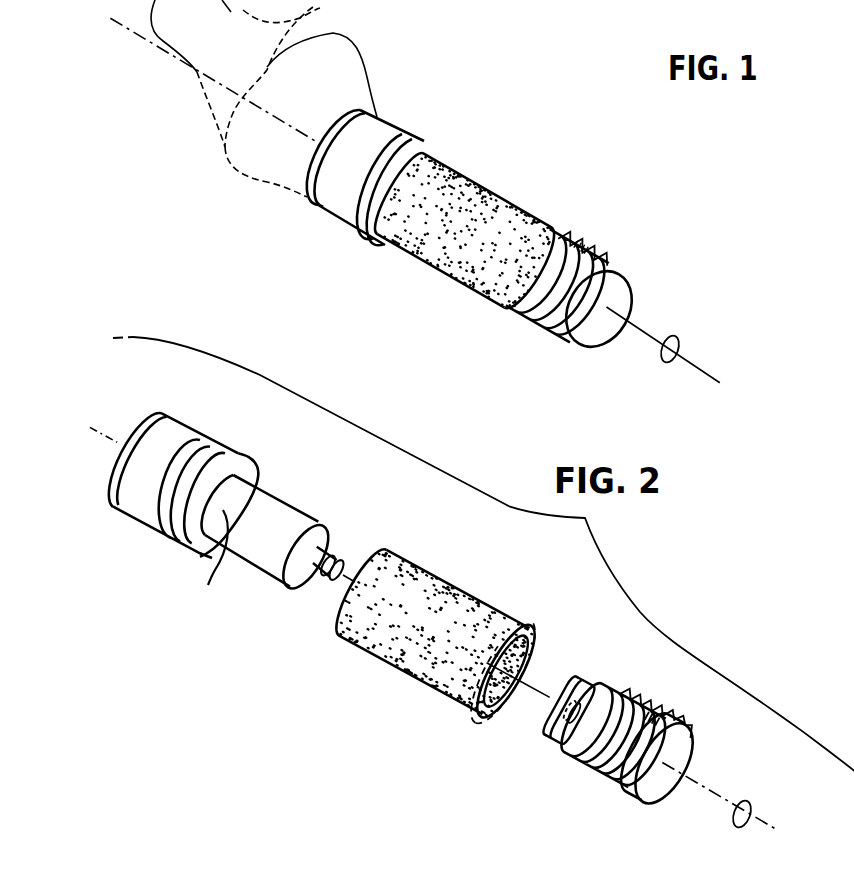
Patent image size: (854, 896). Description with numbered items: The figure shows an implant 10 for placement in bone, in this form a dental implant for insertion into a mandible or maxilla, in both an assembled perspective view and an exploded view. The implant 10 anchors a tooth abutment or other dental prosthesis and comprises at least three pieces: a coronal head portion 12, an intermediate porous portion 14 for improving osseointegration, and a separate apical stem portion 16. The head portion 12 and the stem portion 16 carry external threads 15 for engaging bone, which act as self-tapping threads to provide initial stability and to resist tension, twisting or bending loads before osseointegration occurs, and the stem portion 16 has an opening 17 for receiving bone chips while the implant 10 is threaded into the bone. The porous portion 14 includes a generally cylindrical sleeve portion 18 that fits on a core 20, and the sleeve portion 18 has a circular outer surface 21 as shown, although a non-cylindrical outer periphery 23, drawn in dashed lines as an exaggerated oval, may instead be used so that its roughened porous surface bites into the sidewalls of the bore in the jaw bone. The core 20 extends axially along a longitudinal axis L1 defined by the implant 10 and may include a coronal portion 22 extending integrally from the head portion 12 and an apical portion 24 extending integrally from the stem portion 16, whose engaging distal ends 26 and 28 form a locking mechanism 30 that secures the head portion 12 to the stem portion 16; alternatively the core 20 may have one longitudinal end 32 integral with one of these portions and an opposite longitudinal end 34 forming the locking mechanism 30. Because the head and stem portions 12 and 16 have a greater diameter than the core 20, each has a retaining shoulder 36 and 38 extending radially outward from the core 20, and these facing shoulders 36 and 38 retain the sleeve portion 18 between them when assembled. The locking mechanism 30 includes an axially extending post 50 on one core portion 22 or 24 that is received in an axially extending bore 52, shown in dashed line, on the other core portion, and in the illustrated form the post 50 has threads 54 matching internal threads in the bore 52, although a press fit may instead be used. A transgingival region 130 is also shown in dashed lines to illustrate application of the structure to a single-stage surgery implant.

In FIG. 1, the implant 10 is at (548, 90).
In FIG. 1, the transgingival region 130 is at (306, 16).
In FIG. 1, the head portion 12 is at (370, 114).
In FIG. 2, the head portion 12 is at (185, 415).
In FIG. 1, the porous portion 14 is at (507, 197).
In FIG. 2, the porous portion 14 is at (417, 560).
In FIG. 1, the external threads 15 is at (540, 327).
In FIG. 1, the stem portion 16 is at (600, 260).
In FIG. 2, the stem portion 16 is at (685, 737).
In FIG. 1, the opening 17 is at (492, 305).
In FIG. 2, the sleeve portion 18 is at (460, 597).
In FIG. 2, the core 20 is at (277, 490).
In FIG. 2, the circular outer surface 21 is at (500, 610).
In FIG. 2, the coronal portion 22 is at (227, 543).
In FIG. 2, the outer periphery 23 is at (473, 737).
In FIG. 2, the apical portion 24 is at (560, 747).
In FIG. 2, the distal end 26 is at (303, 590).
In FIG. 2, the distal end 28 is at (560, 687).
In FIG. 2, the locking mechanism 30 is at (323, 577).
In FIG. 2, the longitudinal end 32 is at (222, 513).
In FIG. 2, the opposite longitudinal end 34 is at (610, 690).
In FIG. 2, the retaining shoulder 36 is at (250, 470).
In FIG. 2, the retaining shoulder 38 is at (567, 750).
In FIG. 2, the post 50 is at (323, 553).
In FIG. 2, the bore 52 is at (583, 703).
In FIG. 2, the threads 54 is at (333, 560).
In FIG. 1, the longitudinal axis L1 is at (663, 365).
In FIG. 2, the longitudinal axis L1 is at (737, 828).